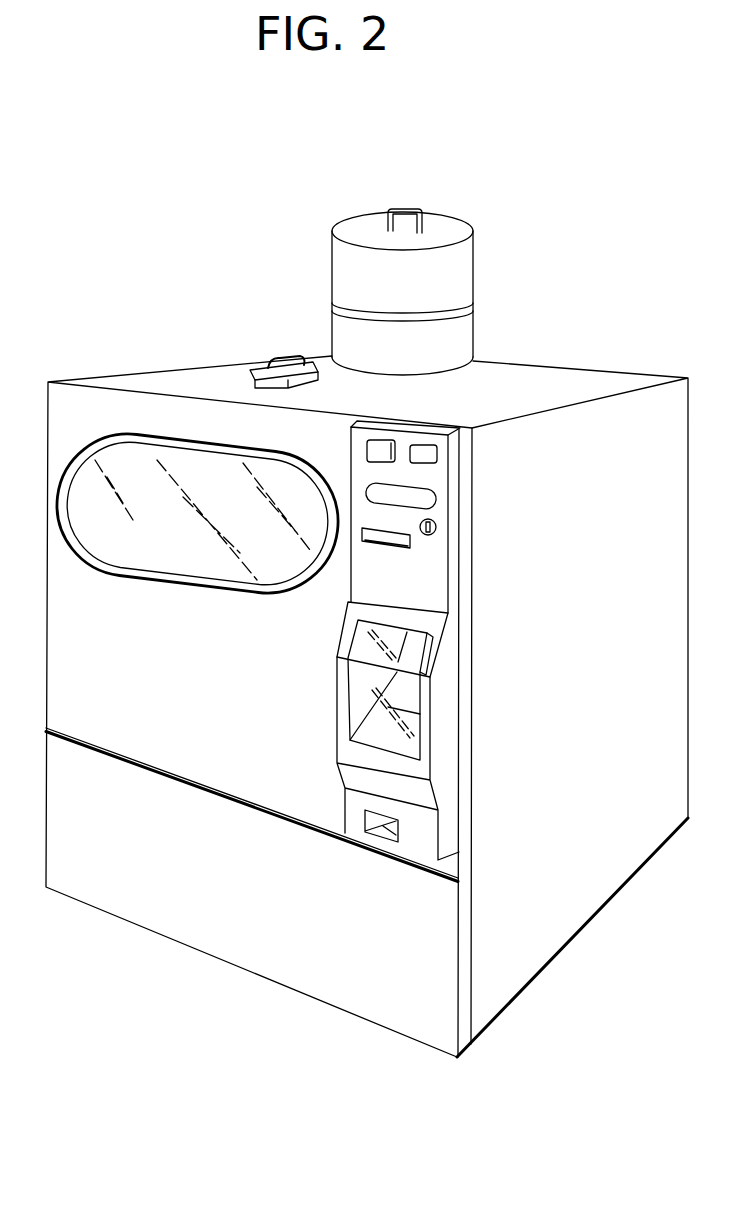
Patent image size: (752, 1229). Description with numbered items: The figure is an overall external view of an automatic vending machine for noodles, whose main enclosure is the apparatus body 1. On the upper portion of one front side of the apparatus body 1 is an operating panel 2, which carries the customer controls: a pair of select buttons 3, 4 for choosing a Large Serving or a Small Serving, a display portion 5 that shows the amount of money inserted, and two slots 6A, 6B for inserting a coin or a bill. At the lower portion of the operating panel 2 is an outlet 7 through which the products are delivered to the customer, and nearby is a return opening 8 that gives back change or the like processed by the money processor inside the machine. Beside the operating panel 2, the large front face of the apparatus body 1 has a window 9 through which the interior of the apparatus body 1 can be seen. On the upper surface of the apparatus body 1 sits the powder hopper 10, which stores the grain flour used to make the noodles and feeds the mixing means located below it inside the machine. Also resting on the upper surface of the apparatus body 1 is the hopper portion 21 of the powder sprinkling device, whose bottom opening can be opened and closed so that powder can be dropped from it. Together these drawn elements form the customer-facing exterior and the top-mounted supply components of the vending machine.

The apparatus body 1 is at (125, 366).
The operating panel 2 is at (435, 426).
The select button 3 is at (366, 451).
The select button 4 is at (427, 457).
The display portion 5 is at (430, 497).
The slot 6A is at (433, 534).
The slot 6B is at (392, 538).
The outlet 7 is at (423, 733).
The return opening 8 is at (383, 836).
The window 9 is at (90, 545).
The powder hopper 10 is at (457, 214).
The hopper portion 21 is at (249, 375).